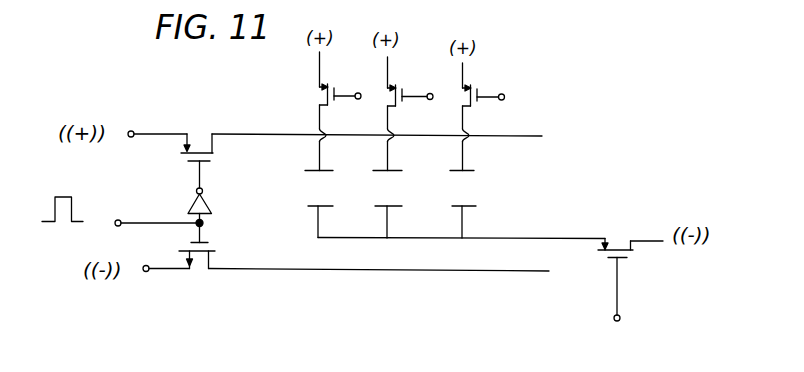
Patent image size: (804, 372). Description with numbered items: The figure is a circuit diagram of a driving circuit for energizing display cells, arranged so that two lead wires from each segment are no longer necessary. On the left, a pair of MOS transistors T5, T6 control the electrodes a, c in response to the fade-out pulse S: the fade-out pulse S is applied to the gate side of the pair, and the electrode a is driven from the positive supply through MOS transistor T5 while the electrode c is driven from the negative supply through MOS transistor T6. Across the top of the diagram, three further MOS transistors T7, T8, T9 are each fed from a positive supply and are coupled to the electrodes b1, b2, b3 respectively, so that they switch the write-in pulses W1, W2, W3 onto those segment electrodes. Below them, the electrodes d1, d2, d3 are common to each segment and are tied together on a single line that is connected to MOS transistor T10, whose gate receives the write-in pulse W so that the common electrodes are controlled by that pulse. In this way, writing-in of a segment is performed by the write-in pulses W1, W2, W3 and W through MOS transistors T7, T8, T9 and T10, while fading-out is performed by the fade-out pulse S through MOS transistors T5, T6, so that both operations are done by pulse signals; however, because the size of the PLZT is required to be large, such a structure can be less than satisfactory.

The MOS transistor T5 is at (196, 147).
The MOS transistor T6 is at (197, 273).
The MOS transistor T7 is at (341, 90).
The MOS transistor T8 is at (411, 91).
The MOS transistor T9 is at (484, 92).
The MOS transistor T10 is at (629, 277).
The write-in pulse W1 is at (354, 110).
The write-in pulse W2 is at (425, 111).
The write-in pulse W3 is at (500, 111).
The write-in pulse W is at (643, 312).
The electrode a is at (377, 122).
The electrode c is at (379, 281).
The fade-out pulse S is at (65, 207).
The electrode b1 is at (309, 158).
The electrode b2 is at (375, 157).
The electrode b3 is at (453, 158).
The electrode d1 is at (309, 219).
The electrode d2 is at (377, 220).
The electrode d3 is at (451, 219).